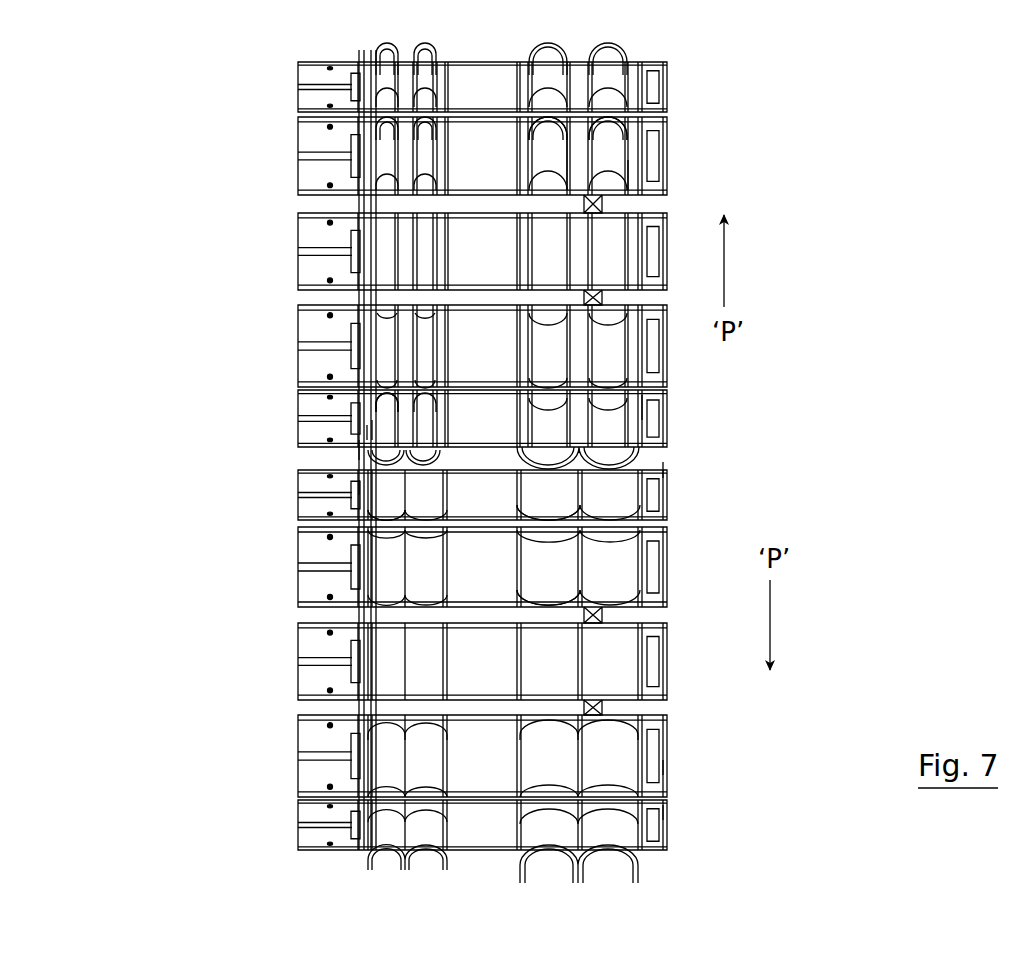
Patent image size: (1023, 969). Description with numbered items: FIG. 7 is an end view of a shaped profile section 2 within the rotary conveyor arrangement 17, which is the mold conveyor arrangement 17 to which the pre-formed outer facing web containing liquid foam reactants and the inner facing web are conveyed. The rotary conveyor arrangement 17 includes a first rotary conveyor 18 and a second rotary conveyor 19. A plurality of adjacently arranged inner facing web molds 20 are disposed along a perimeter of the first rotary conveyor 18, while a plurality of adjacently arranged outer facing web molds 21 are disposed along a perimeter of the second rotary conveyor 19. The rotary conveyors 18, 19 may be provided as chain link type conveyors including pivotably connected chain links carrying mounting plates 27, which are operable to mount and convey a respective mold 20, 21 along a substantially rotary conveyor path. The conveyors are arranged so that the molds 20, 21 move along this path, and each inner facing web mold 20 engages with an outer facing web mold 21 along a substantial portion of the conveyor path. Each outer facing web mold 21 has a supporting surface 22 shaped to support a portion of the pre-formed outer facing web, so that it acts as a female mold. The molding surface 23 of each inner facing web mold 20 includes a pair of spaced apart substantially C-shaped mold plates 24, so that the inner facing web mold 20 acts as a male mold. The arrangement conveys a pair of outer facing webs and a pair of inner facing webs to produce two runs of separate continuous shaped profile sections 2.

The continuous shaped profile section 2 is at (355, 450).
The rotary conveyor arrangement 17 is at (818, 258).
The first rotary conveyor 18 is at (298, 203).
The second rotary conveyor 19 is at (298, 707).
The inner facing web mold 20 is at (630, 175).
The outer facing web mold 21 is at (358, 488).
The supporting surface 22 is at (360, 510).
The molding surface 23 is at (587, 163).
The C-shaped mold plate 24 is at (612, 137).
The mounting plate 27 is at (660, 767).